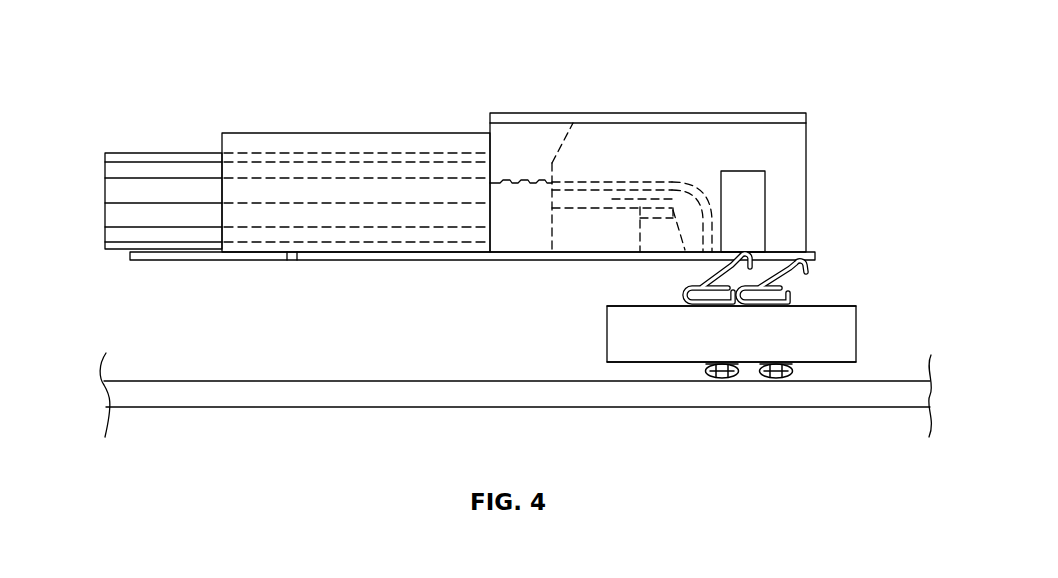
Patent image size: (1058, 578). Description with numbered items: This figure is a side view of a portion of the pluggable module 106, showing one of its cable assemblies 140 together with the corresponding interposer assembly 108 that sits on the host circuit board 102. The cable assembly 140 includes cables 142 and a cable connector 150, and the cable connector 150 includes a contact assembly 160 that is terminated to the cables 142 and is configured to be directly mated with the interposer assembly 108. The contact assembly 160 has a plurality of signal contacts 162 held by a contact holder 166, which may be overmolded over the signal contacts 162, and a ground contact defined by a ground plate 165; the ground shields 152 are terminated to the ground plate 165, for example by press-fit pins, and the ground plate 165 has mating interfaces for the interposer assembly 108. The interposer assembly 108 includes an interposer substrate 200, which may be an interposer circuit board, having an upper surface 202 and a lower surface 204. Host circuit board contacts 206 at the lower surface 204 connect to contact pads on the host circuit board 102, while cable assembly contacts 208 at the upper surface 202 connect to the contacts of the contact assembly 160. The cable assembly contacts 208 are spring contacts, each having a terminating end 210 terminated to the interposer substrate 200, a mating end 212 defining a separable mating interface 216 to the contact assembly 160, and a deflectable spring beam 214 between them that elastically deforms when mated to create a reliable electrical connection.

The host circuit board 102 is at (653, 393).
The pluggable module 106 is at (748, 56).
The interposer assembly 108 is at (740, 348).
The cable assembly 140 is at (145, 137).
The cables 142 is at (128, 221).
The cable connector 150 is at (787, 109).
The ground shields 152 is at (642, 145).
The contact assembly 160 is at (684, 173).
The signal contacts 162 is at (722, 209).
The ground plate 165 is at (513, 261).
The contact holder 166 is at (780, 150).
The interposer substrate 200 is at (837, 337).
The upper surface 202 is at (828, 305).
The lower surface 204 is at (797, 366).
The host circuit board contacts 206 is at (810, 371).
The cable assembly contacts 208 is at (808, 273).
The terminating end 210 is at (745, 262).
The mating end 212 is at (727, 272).
The deflectable spring beam 214 is at (712, 287).
The separable mating interface 216 is at (775, 283).